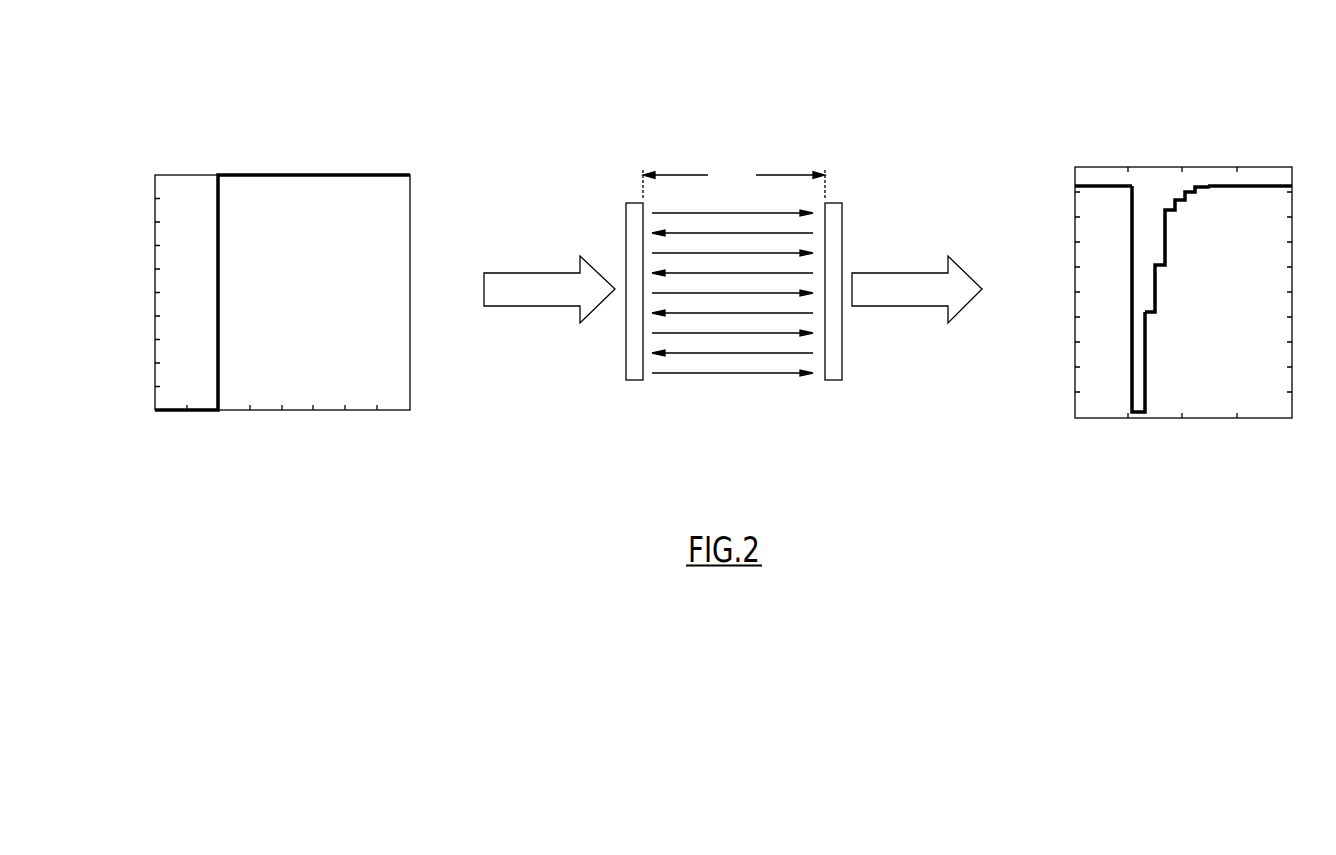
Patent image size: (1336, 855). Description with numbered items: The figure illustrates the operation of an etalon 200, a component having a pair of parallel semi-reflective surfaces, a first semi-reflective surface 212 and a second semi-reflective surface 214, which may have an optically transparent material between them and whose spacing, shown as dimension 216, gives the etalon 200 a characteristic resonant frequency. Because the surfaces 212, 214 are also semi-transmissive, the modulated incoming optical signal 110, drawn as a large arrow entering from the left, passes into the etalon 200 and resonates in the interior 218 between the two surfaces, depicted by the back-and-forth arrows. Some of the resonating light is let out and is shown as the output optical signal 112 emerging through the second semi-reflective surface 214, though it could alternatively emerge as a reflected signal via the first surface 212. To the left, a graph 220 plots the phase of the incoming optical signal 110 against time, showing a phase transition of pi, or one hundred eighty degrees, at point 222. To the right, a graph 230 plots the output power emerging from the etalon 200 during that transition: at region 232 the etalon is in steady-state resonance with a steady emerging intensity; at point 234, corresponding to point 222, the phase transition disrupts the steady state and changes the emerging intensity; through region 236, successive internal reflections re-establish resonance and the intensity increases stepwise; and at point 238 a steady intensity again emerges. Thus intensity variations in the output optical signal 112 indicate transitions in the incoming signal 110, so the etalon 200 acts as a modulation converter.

The modulated incoming optical signal 110 is at (528, 273).
The output optical signal 112 is at (887, 272).
The etalon 200 is at (728, 250).
The first semi-reflective surface 212 is at (617, 228).
The second semi-reflective surface 214 is at (851, 228).
The dimension 216 is at (734, 181).
The interior 218 is at (735, 392).
The graph 220 is at (260, 265).
The point 222 is at (216, 162).
The graph 230 is at (1166, 260).
The region 232 is at (1098, 177).
The point 234 is at (1134, 207).
The region 236 is at (1157, 293).
The point 238 is at (1248, 188).